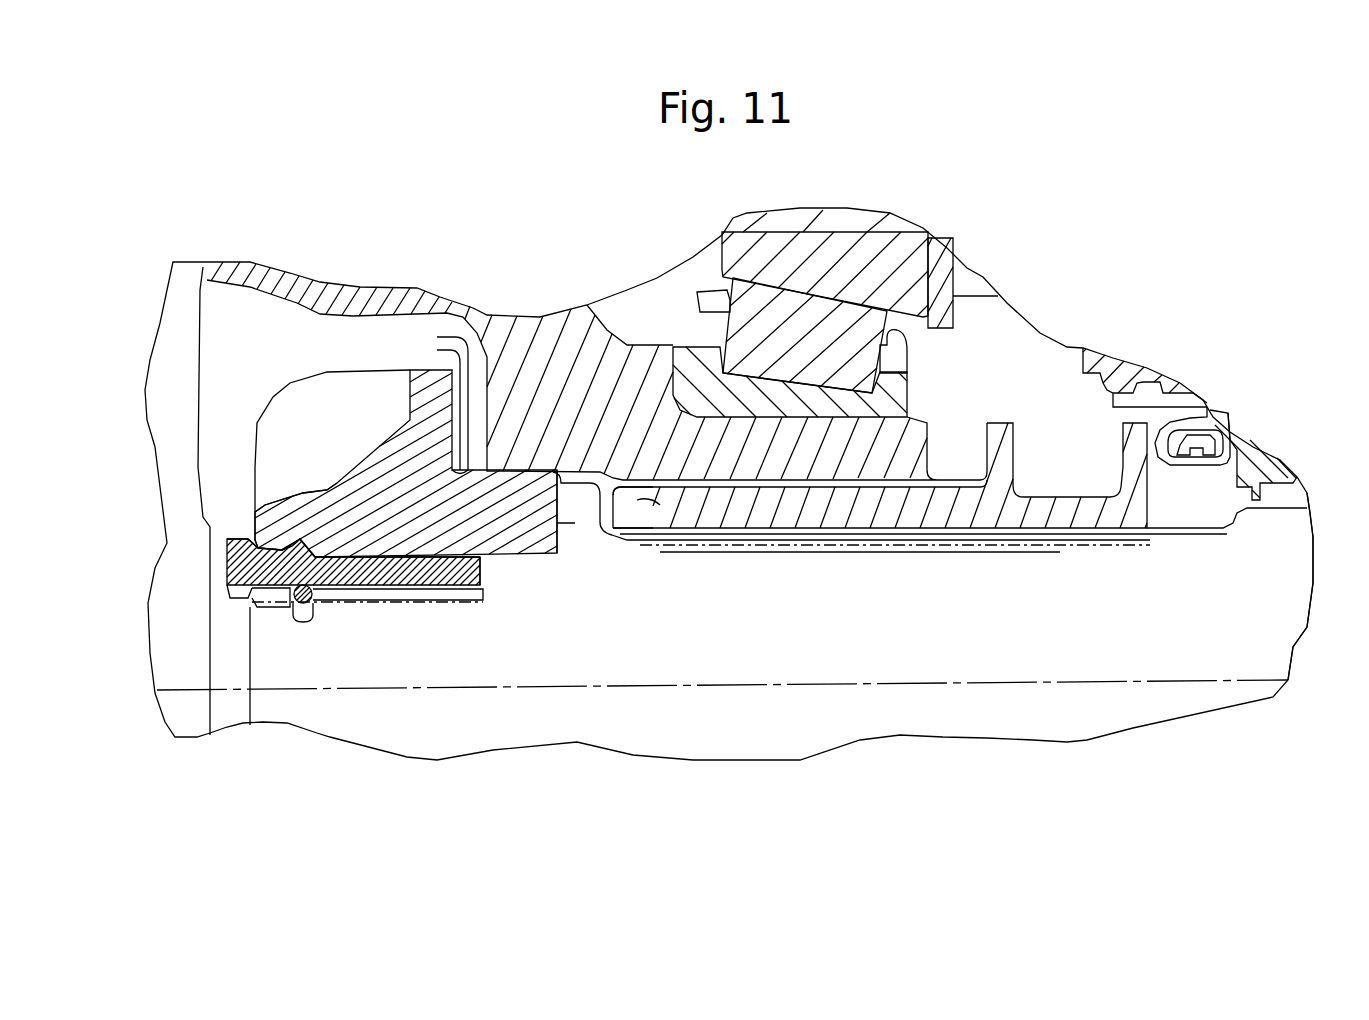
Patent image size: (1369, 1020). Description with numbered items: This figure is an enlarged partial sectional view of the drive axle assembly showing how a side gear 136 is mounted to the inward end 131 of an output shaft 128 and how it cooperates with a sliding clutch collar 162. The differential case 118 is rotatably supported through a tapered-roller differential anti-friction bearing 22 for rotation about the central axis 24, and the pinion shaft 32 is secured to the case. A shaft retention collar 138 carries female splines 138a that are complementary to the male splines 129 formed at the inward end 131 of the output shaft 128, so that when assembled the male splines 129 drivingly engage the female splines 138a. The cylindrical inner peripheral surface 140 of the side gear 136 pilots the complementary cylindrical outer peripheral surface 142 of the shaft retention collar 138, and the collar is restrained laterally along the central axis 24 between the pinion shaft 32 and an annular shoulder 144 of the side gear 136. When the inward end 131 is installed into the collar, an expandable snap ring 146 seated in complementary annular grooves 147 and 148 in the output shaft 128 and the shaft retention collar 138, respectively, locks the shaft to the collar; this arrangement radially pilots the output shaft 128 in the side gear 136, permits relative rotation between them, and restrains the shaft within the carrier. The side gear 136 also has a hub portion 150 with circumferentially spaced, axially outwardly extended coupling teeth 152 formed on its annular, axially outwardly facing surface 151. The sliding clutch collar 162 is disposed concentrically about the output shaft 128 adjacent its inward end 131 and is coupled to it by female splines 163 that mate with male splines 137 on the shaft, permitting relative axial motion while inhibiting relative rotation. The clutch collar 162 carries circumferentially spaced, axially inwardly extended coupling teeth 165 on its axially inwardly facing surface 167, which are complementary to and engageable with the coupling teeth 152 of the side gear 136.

The differential anti-friction bearing 22 is at (689, 293).
The central axis 24 is at (1225, 681).
The pinion shaft 32 is at (163, 412).
The differential case 118 is at (316, 300).
The output shaft 128 is at (1273, 632).
The male splines 129 is at (473, 593).
The inward end of the output shaft 131 is at (263, 647).
The side gear 136 is at (315, 410).
The male splines 137 is at (1150, 538).
The shaft retention collar 138 is at (227, 572).
The female splines 138a is at (237, 592).
The cylindrical inner peripheral surface 140 is at (523, 555).
The cylindrical outer peripheral surface 142 is at (423, 557).
The annular shoulder 144 is at (243, 540).
The snap ring 146 is at (320, 590).
The annular groove 147 is at (313, 622).
The annular groove 148 is at (313, 550).
The hub portion 150 is at (513, 500).
The axially outwardly facing surface 151 is at (557, 525).
The coupling teeth 152 is at (590, 518).
The sliding clutch collar 162 is at (827, 510).
The female splines 163 is at (907, 540).
The coupling teeth 165 is at (640, 520).
The axially inwardly facing surface 167 is at (645, 507).